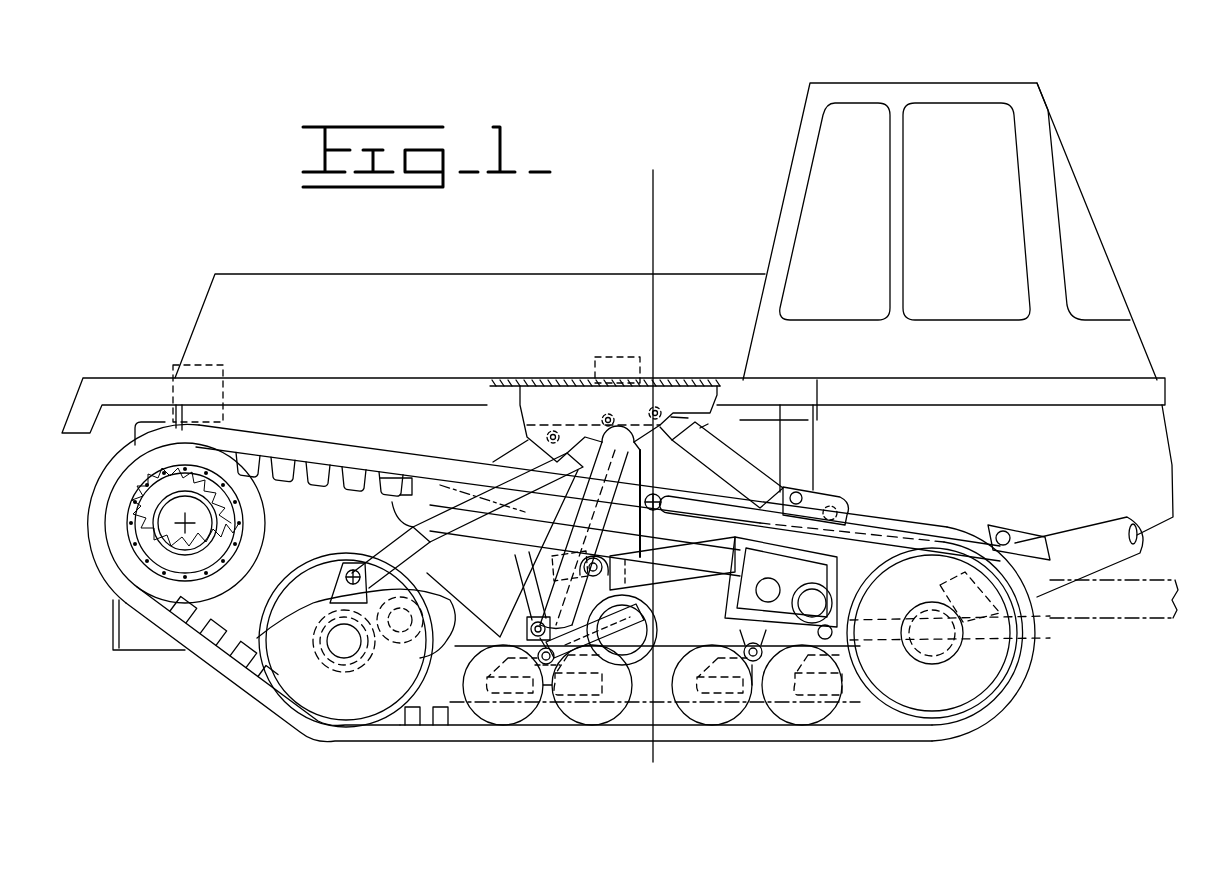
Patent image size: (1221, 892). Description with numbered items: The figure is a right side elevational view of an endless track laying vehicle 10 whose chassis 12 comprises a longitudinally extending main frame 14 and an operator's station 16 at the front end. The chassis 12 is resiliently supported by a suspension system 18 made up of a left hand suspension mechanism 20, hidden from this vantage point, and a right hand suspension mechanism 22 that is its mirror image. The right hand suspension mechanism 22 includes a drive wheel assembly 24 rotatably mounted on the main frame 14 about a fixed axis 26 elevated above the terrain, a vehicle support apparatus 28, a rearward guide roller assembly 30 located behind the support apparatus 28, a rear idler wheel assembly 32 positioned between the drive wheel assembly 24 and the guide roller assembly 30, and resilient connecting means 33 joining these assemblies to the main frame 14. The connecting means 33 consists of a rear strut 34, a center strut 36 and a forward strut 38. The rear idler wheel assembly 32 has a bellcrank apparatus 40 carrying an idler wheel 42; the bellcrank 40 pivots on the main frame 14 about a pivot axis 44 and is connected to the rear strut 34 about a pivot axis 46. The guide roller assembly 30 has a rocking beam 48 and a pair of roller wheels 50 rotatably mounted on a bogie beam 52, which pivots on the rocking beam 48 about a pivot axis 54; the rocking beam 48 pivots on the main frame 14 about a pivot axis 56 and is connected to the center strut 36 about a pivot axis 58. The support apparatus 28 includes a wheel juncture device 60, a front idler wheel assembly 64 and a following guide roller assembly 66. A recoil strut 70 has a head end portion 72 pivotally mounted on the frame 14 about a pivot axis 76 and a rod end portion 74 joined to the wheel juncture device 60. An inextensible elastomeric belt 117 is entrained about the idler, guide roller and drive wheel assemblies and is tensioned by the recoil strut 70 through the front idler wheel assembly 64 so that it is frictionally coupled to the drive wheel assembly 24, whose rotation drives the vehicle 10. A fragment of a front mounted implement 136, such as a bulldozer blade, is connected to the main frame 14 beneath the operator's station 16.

The vehicle 10 is at (300, 245).
The chassis 12 is at (175, 348).
The main frame 14 is at (382, 415).
The operator's station 16 is at (915, 80).
The suspension system 18 is at (180, 660).
The left hand suspension mechanism 20 is at (548, 270).
The right hand suspension mechanism 22 is at (460, 750).
The drive wheel assembly 24 is at (258, 522).
The fixed axis 26 is at (185, 523).
The vehicle support apparatus 28 is at (840, 535).
The rearward guide roller assembly 30 is at (545, 715).
The rear idler wheel assembly 32 is at (283, 705).
The resilient connecting means 33 is at (493, 462).
The rear strut 34 is at (520, 455).
The center strut 36 is at (588, 425).
The forward strut 38 is at (735, 465).
The bellcrank apparatus 40 is at (340, 597).
The idler wheel 42 is at (330, 712).
The pivot axis 44 is at (435, 600).
The pivot axis 46 is at (352, 568).
The rocking beam 48 is at (595, 615).
The roller wheels 50 is at (462, 680).
The bogie beam 52 is at (590, 715).
The pivot axis 54 is at (556, 645).
The pivot axis 56 is at (650, 627).
The pivot axis 58 is at (527, 617).
The wheel juncture device 60 is at (862, 592).
The front idler wheel assembly 64 is at (1020, 683).
The following wheel assembly 66 is at (770, 727).
The recoil strut 70 is at (690, 563).
The head end portion 72 is at (668, 595).
The rod end portion 74 is at (632, 548).
The pivot axis 76 is at (552, 560).
The inextensible elastomeric belt 117 is at (1030, 640).
The front mounted implement 136 is at (1130, 570).